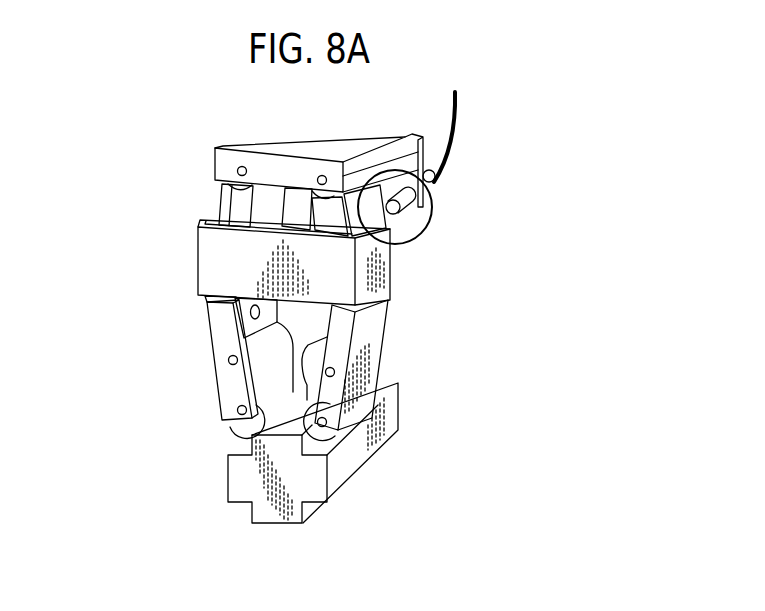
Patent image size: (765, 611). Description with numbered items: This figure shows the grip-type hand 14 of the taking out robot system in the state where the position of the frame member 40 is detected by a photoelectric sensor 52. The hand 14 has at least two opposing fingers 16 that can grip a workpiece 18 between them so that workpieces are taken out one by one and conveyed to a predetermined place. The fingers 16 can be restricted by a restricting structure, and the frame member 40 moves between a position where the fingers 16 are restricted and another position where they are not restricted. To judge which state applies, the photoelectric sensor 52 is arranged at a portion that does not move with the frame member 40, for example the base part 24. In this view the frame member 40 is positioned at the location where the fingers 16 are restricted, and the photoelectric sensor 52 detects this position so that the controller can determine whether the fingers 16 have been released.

The hand 14 is at (152, 303).
The fingers 16 is at (224, 343).
The workpiece 18 is at (262, 512).
The base part 24 is at (236, 147).
The frame member 40 is at (212, 258).
The photoelectric sensor 52 is at (400, 213).